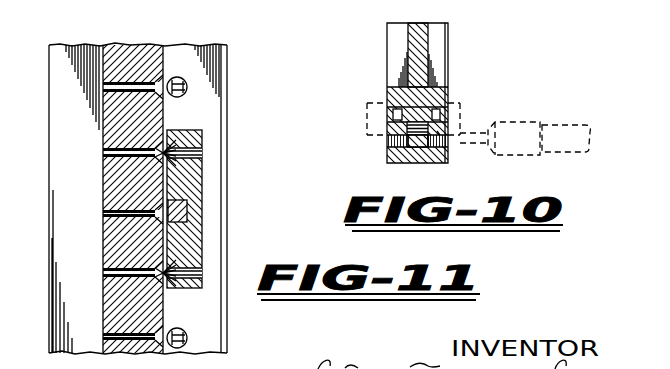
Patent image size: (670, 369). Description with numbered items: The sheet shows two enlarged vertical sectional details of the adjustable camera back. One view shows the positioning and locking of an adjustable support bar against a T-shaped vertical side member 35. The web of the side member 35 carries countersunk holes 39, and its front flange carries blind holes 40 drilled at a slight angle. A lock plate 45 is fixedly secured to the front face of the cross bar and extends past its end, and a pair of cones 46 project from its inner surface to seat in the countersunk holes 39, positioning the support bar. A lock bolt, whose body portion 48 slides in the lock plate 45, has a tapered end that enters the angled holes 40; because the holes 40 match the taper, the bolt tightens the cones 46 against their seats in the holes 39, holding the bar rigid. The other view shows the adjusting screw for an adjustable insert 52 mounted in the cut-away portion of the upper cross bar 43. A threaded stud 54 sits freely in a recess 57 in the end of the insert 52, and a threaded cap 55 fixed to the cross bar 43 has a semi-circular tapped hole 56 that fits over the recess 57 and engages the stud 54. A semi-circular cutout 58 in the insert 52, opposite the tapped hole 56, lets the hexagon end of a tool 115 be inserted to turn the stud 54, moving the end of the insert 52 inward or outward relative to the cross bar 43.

In FIG. 11, the T-shaped vertical side member 35 is at (57, 229).
In FIG. 11, the holes 39 is at (165, 77).
In FIG. 11, the horizontal holes 40 is at (187, 87).
In FIG. 11, the lock plate 45 is at (197, 192).
In FIG. 11, the cones 46 is at (168, 143).
In FIG. 11, the body portion 48 is at (187, 212).
In FIG. 10, the upper cross bar 43 is at (417, 50).
In FIG. 10, the adjustable insert 52 is at (367, 106).
In FIG. 10, the threaded stud 54 is at (404, 163).
In FIG. 10, the threaded cap 55 is at (437, 163).
In FIG. 10, the semi-circular tapped hole 56 is at (390, 139).
In FIG. 10, the recess 57 is at (417, 125).
In FIG. 10, the semi-circular cutout 58 is at (437, 133).
In FIG. 10, the tool 115 is at (523, 127).